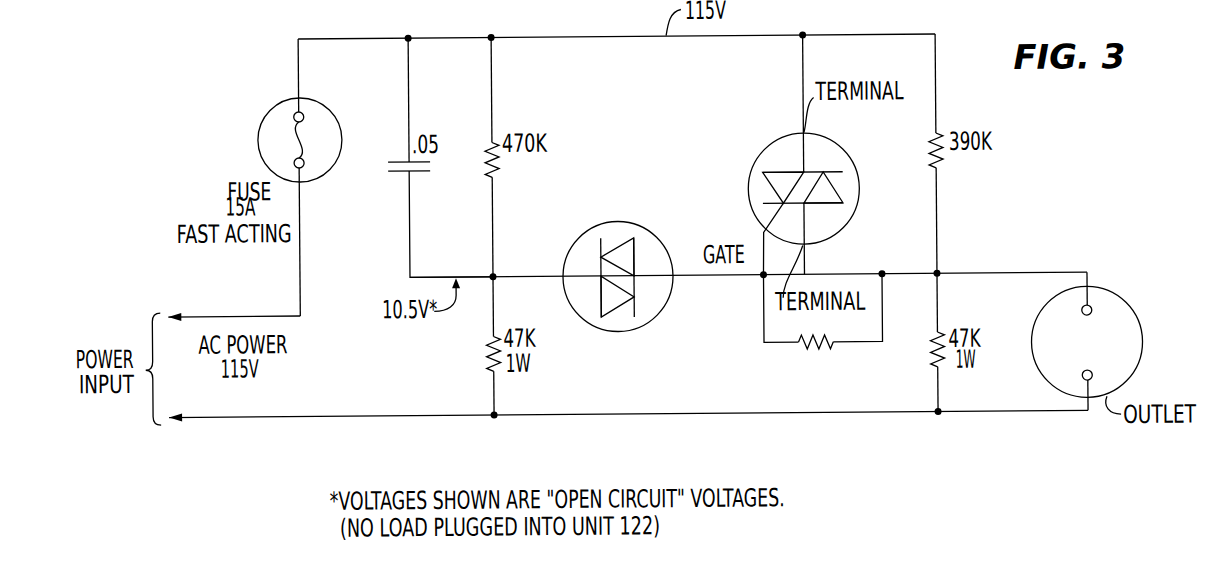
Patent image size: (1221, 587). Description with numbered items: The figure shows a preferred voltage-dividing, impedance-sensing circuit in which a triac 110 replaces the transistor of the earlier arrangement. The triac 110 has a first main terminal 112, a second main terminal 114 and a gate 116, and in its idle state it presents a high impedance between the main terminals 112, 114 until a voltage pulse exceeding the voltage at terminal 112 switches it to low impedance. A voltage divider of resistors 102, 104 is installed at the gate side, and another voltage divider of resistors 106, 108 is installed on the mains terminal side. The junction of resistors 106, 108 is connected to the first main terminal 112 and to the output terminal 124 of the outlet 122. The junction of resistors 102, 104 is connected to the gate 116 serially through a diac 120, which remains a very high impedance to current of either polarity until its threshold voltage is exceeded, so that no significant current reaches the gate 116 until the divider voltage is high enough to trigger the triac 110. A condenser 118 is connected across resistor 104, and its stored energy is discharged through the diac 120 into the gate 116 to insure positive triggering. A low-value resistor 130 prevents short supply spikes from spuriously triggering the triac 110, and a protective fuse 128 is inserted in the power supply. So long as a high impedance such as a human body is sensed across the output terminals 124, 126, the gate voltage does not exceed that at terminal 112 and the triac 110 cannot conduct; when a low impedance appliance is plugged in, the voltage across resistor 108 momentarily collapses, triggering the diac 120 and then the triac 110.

The resistor 102 is at (488, 352).
The resistor 104 is at (499, 172).
The resistor 106 is at (946, 168).
The resistor 108 is at (932, 358).
The triac 110 is at (835, 145).
The Main Terminal-1 112 is at (806, 246).
The Main Terminal-2 114 is at (800, 134).
The gate 116 is at (762, 233).
The condenser 118 is at (405, 170).
The diac 120 is at (630, 331).
The outlet 122 is at (1136, 316).
The output terminal 124 is at (1081, 317).
The output terminal 126 is at (1091, 379).
The protective fuse 128 is at (265, 115).
The resistor 130 is at (805, 350).